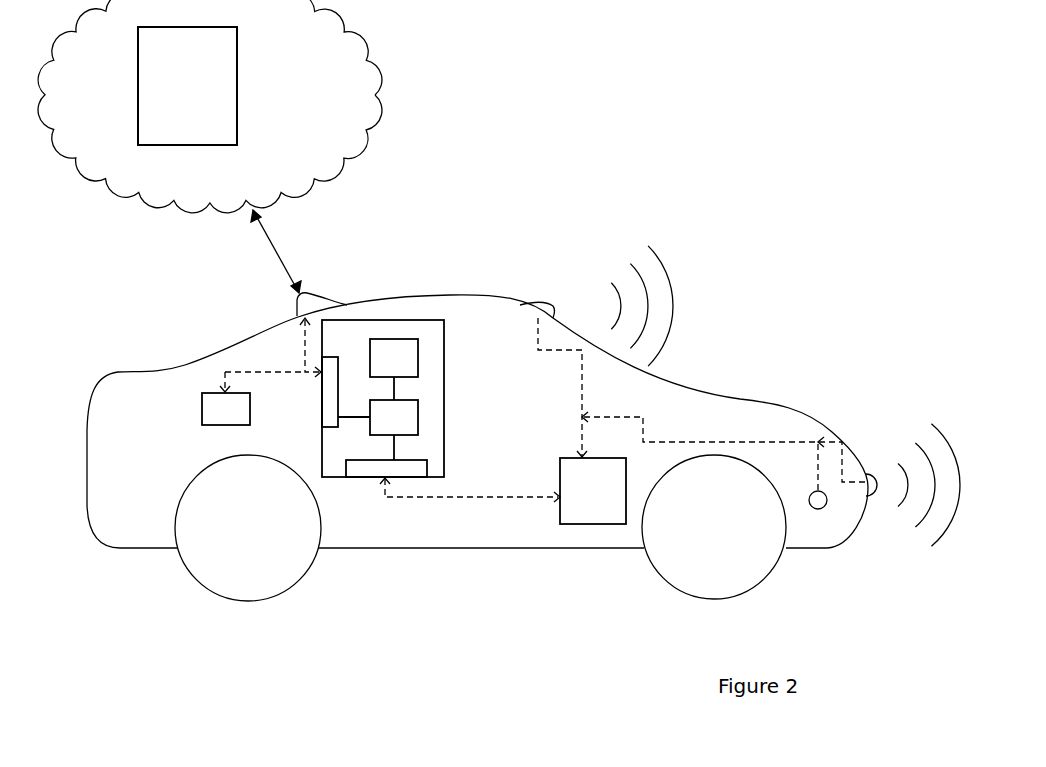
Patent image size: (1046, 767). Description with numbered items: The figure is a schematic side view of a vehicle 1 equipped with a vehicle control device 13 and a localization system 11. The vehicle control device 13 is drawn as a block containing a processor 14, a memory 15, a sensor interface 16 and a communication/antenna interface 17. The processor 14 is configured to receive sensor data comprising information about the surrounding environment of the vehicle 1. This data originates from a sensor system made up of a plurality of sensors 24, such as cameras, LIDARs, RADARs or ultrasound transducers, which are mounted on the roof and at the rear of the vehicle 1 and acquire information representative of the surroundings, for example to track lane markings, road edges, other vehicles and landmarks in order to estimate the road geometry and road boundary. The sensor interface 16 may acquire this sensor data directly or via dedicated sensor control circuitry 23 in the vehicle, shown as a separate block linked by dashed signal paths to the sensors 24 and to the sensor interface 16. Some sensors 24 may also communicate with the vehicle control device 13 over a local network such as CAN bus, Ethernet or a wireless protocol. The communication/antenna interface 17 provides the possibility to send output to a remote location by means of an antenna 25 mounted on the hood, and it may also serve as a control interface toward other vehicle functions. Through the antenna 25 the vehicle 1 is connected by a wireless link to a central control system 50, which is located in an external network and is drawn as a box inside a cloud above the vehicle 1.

The vehicle 1 is at (105, 545).
The central control system 50 is at (237, 73).
The antenna 25 is at (308, 292).
The vehicle control device 13 is at (376, 368).
The communication/antenna interface 17 is at (326, 403).
The memory 15 is at (395, 339).
The processor 14 is at (418, 420).
The sensor interface 16 is at (370, 477).
The localization system 11 is at (202, 418).
The sensor control circuitry 23 is at (605, 525).
The sensors 24 is at (543, 301).